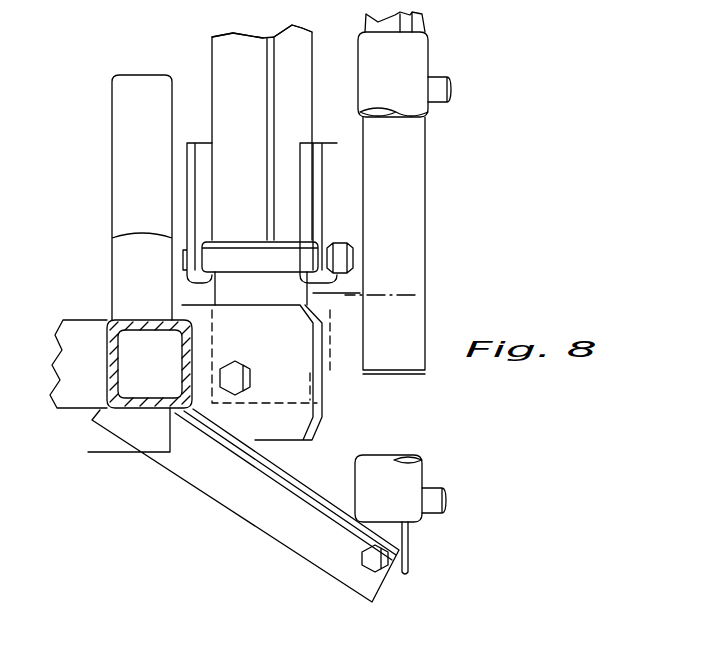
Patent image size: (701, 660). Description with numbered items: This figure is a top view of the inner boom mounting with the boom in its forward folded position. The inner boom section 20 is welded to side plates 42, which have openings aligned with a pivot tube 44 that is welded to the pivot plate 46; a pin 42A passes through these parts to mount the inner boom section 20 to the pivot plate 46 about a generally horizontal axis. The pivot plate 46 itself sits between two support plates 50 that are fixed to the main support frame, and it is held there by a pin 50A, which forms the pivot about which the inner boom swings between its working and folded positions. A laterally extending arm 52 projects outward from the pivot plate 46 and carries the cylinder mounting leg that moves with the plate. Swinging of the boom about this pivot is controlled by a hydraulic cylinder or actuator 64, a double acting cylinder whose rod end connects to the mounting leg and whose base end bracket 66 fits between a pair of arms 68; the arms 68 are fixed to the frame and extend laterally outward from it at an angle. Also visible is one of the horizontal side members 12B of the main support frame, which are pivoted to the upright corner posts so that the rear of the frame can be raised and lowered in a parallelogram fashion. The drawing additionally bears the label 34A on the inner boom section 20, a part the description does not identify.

The horizontal side member 12B is at (118, 155).
The inner boom section 20 is at (218, 70).
The mast top section 34A is at (225, 48).
The side plate 42 is at (190, 160).
The pin 42A is at (345, 243).
The pivot tube 44 is at (248, 262).
The pivot plate 46 is at (218, 293).
The support plate 50 is at (330, 418).
The pin 50A is at (240, 370).
The laterally extending arm 52 is at (350, 350).
The hydraulic cylinder 64 is at (410, 62).
The base end bracket 66 is at (410, 542).
The arm 68 is at (210, 486).